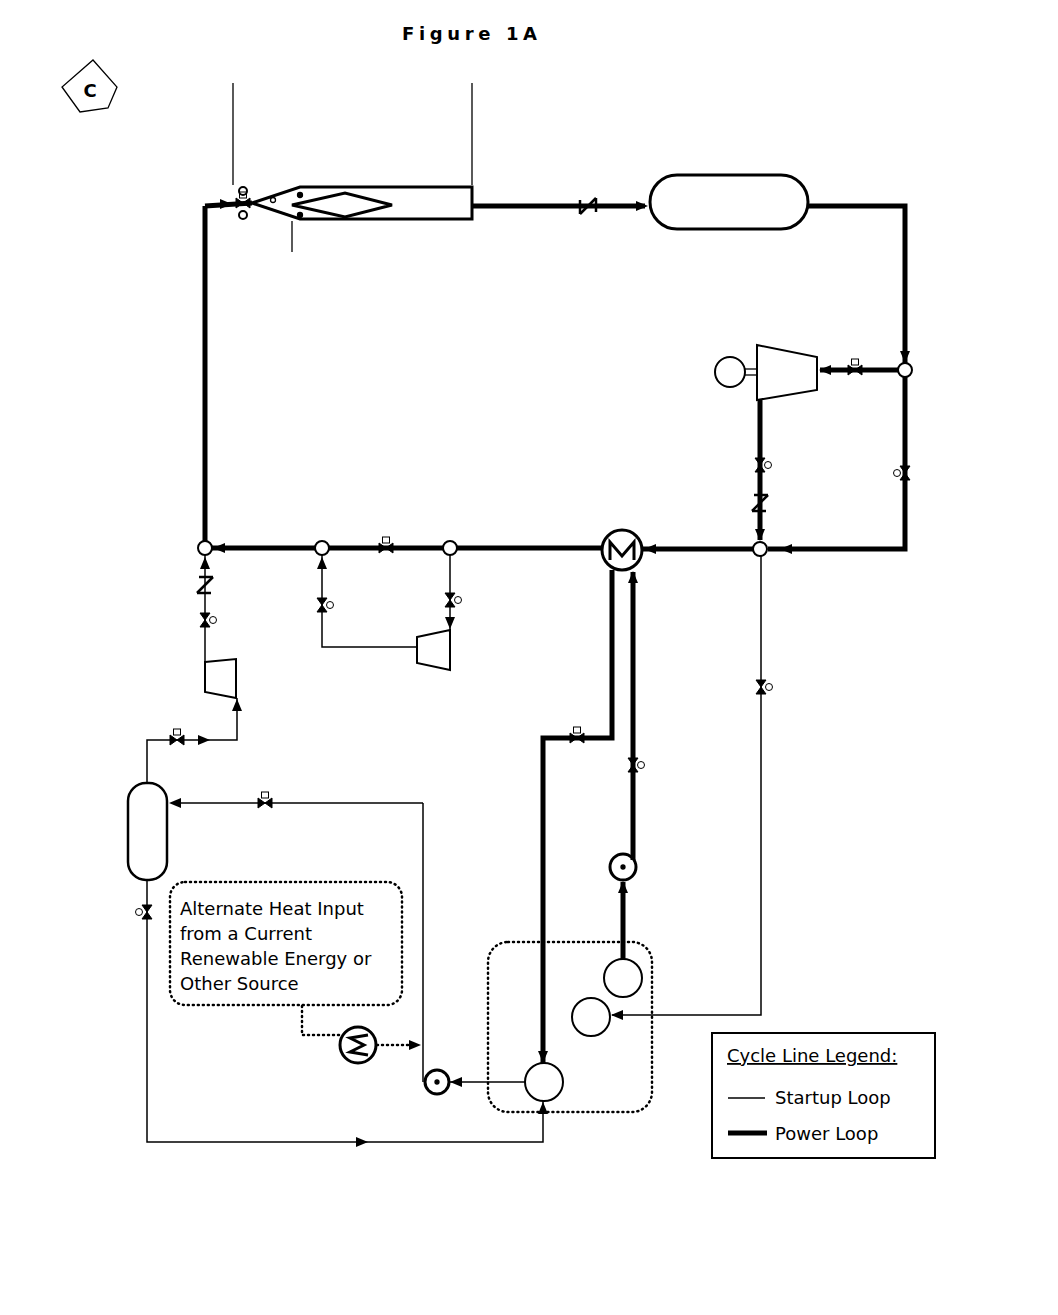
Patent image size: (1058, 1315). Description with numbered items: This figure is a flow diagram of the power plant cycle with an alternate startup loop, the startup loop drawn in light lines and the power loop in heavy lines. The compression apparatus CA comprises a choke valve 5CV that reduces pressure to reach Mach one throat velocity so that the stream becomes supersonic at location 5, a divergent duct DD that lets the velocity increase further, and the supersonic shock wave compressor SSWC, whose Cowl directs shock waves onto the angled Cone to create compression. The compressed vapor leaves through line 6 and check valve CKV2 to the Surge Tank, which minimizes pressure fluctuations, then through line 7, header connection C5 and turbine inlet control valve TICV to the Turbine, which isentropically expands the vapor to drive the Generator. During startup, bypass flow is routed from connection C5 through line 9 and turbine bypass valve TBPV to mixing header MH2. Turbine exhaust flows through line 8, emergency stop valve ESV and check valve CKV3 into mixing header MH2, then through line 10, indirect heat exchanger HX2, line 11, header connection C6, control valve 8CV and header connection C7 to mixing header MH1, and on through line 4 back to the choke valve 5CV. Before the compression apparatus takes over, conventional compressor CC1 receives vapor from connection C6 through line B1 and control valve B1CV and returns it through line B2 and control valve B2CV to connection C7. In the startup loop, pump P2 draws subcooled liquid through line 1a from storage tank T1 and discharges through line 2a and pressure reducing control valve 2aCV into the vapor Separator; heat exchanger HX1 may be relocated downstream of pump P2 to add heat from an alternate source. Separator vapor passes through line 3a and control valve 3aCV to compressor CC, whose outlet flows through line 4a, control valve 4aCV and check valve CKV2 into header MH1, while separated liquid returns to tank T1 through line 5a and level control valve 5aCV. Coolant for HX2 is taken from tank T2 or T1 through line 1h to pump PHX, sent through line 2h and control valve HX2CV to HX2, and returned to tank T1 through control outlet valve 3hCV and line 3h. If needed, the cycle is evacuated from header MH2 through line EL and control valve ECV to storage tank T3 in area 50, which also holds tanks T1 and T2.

The compression apparatus CA is at (472, 131).
The cowl Cowl is at (302, 194).
The cone Cone is at (328, 197).
The location 5 is at (272, 196).
The divergent duct DD is at (278, 215).
The supersonic shock wave compressor SSWC is at (292, 238).
The choke valve 5CV is at (242, 218).
The line 6 is at (520, 202).
The check valve CKV2 is at (592, 200).
The surge tank Surge Tank is at (737, 175).
The line 7 is at (877, 203).
The header connection C5 is at (897, 375).
The turbine inlet control valve TICV is at (853, 357).
The turbine Turbine is at (807, 353).
The generator Generator is at (723, 355).
The line 8 is at (762, 428).
The emergency stop valve ESV is at (745, 460).
The check valve CKV3 is at (765, 497).
The line 9 is at (902, 438).
The turbine bypass valve TBPV is at (895, 480).
The mixing header MH2 is at (766, 554).
The line 10 is at (723, 555).
The indirect heat exchanger HX2 is at (630, 528).
The line 11 is at (525, 547).
The header connection C6 is at (453, 542).
The control valve 8CV is at (387, 535).
The header connection C7 is at (325, 542).
The mixing header MH1 is at (211, 543).
The line 4 is at (208, 438).
The line 4a is at (202, 653).
The control valve 4aCV is at (215, 620).
The conventional compressor CC is at (240, 682).
The line 3a is at (145, 758).
The control valve 3aCV is at (173, 728).
The line B2 is at (367, 653).
The control valve B2CV is at (338, 605).
The line B1 is at (453, 567).
The control valve B1CV is at (463, 602).
The conventional compressor CC1 is at (453, 652).
The vapor separator Separator is at (127, 815).
The line 2a is at (425, 982).
The pressure reducing control valve 2aCV is at (267, 787).
The line 5a is at (147, 1098).
The level control valve 5aCV is at (138, 918).
The heat exchanger HX1 is at (348, 1067).
The pump P2 is at (427, 1097).
The line 1a is at (480, 1087).
The line 3h is at (608, 613).
The control outlet valve 3hCV is at (572, 725).
The line 2h is at (637, 823).
The control valve HX2CV is at (647, 763).
The pump PHX is at (637, 866).
The line 1h is at (627, 922).
The evacuation line EL is at (763, 628).
The control valve ECV is at (773, 688).
The area 50 is at (492, 942).
The storage tank T1 is at (544, 1082).
The storage tank T2 is at (623, 978).
The storage tank T3 is at (591, 1017).